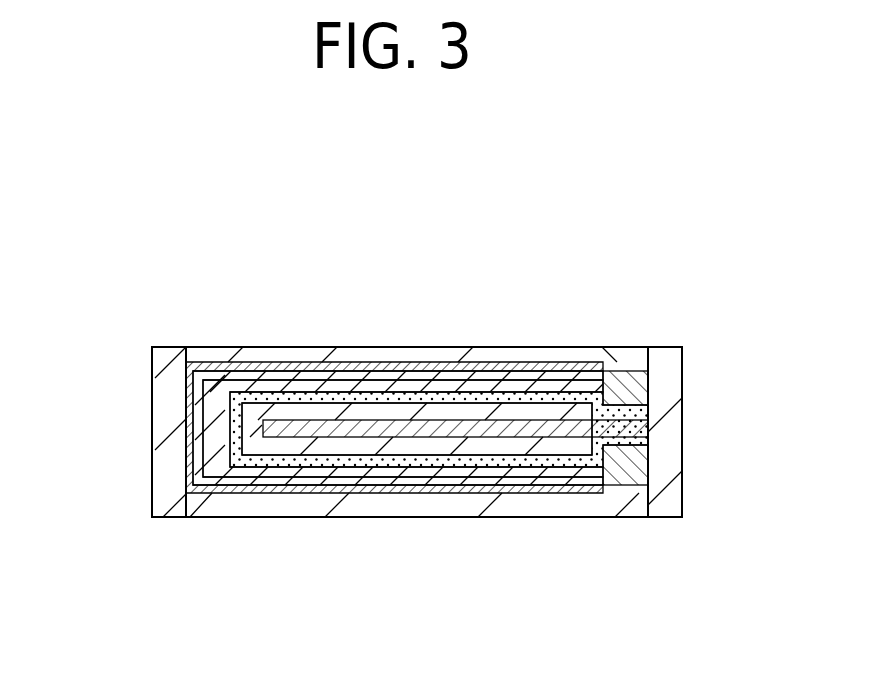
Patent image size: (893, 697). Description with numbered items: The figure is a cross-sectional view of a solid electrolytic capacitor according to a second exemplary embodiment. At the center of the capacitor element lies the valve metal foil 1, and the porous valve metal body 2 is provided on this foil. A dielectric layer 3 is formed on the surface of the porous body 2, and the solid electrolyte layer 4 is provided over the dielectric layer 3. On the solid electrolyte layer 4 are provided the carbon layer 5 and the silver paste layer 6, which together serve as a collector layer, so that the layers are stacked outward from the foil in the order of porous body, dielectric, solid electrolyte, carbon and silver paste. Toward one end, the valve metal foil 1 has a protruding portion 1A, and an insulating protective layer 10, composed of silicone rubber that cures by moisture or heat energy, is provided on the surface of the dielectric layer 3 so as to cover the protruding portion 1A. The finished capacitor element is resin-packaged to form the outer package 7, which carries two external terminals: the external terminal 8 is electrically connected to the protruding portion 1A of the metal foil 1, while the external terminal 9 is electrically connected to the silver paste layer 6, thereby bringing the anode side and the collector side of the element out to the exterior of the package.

The valve metal foil 1 is at (310, 427).
The protruding portion 1A is at (623, 410).
The porous valve metal body 2 is at (423, 443).
The dielectric layer 3 is at (527, 462).
The solid electrolyte layer 4 is at (515, 395).
The carbon layer 5 is at (437, 385).
The silver paste layer 6 is at (225, 363).
The outer package 7 is at (360, 368).
The external terminal 8 is at (675, 427).
The external terminal 9 is at (162, 412).
The insulating protective layer 10 is at (623, 470).